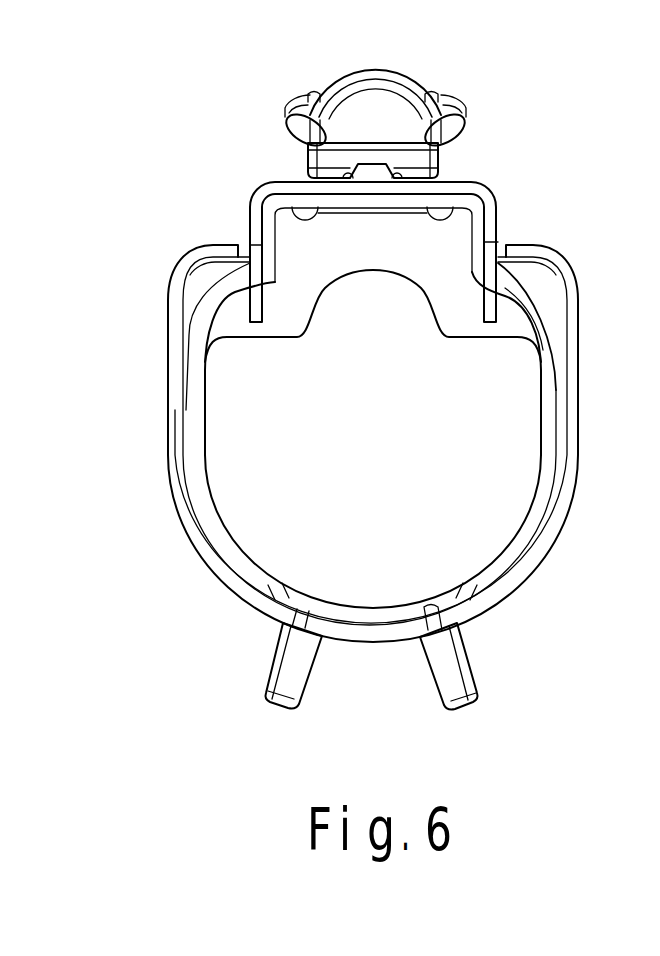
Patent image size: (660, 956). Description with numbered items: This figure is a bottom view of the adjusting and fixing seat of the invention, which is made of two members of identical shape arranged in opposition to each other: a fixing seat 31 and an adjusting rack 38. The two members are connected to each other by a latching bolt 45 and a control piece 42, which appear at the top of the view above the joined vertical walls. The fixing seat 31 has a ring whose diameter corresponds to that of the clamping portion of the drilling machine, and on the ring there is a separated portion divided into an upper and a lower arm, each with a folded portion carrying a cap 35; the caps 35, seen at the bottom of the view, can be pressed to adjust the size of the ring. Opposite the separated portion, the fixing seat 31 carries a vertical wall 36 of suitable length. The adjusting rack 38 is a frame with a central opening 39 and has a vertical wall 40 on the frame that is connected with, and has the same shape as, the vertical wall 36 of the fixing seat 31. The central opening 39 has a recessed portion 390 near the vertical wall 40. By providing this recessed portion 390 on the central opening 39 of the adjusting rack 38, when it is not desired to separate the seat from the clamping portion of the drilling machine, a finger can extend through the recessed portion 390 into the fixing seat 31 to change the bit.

The fixing seat 31 is at (542, 347).
The cap 35 is at (458, 685).
The vertical wall 36 is at (452, 200).
The adjusting rack 38 is at (550, 267).
The central opening 39 is at (263, 522).
The recessed portion 390 is at (347, 308).
The vertical wall 40 is at (252, 193).
The control piece 42 is at (368, 95).
The latching bolt 45 is at (406, 211).